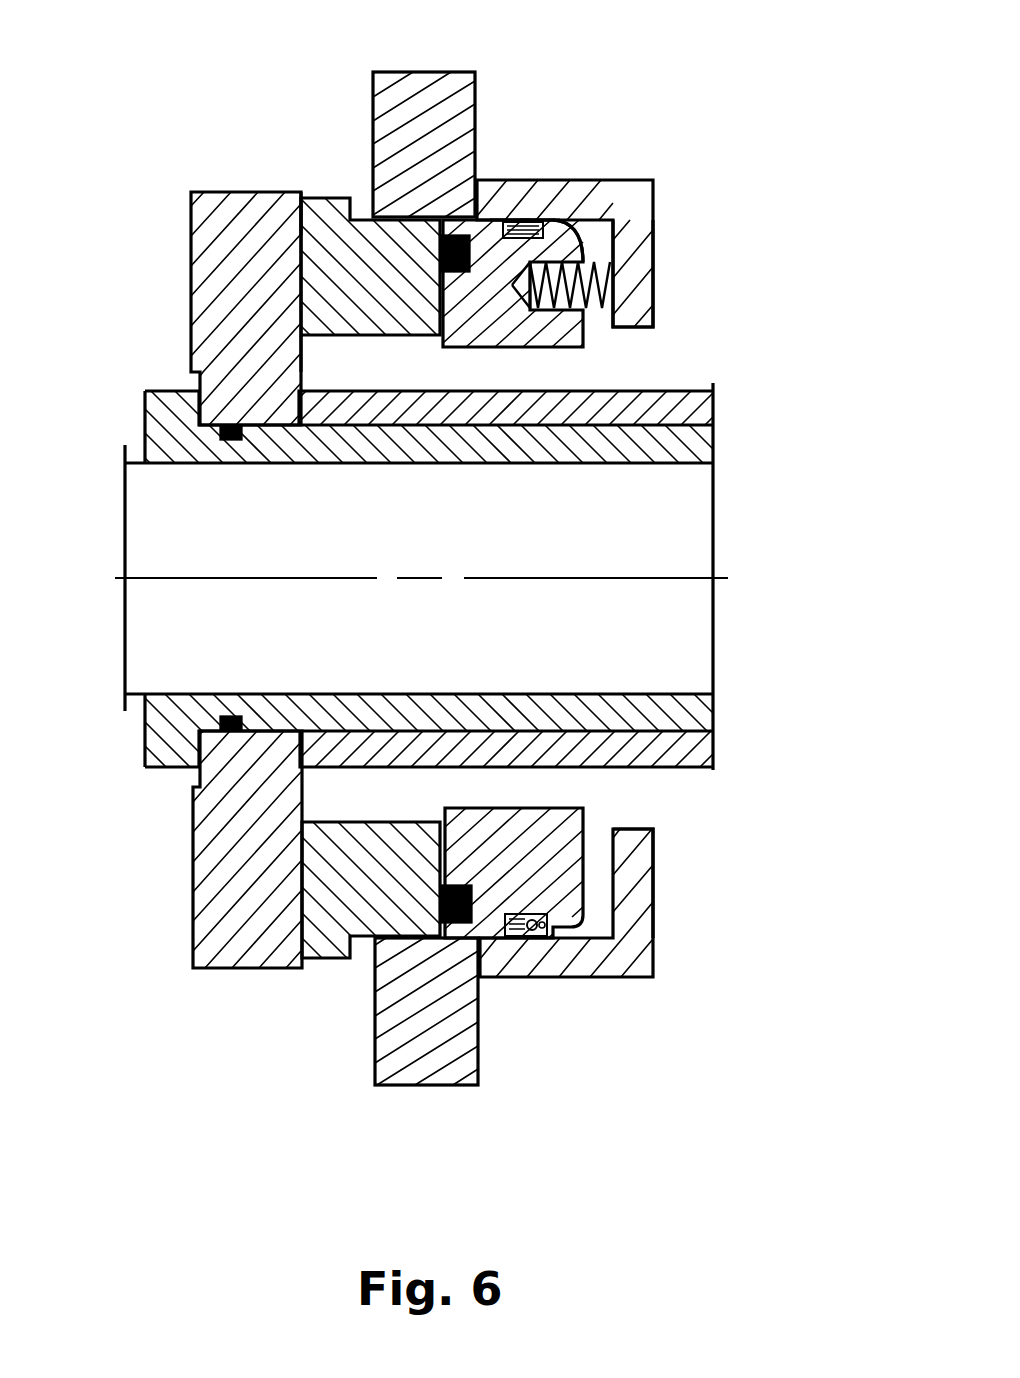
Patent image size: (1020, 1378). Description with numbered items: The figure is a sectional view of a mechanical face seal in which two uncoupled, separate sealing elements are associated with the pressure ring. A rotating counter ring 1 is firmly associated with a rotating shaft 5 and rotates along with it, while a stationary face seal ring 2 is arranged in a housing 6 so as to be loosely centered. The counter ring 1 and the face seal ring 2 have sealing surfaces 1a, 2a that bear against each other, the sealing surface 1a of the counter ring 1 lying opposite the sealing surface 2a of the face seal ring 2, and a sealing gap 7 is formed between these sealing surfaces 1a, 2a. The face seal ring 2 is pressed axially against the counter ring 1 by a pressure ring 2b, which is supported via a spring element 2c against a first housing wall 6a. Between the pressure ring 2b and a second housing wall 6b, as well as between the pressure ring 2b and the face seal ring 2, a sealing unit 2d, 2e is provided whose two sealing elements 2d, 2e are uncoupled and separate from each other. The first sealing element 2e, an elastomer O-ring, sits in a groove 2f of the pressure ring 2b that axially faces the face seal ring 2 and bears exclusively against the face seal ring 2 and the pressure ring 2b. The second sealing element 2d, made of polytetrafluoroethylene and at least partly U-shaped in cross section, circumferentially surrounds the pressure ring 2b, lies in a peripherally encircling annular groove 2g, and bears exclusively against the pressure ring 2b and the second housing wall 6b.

The counter ring 1 is at (200, 290).
The sealing surface 1a is at (303, 190).
The face seal ring 2 is at (336, 200).
The sealing surface 2a is at (332, 250).
The pressure ring 2b is at (492, 212).
The spring element 2c is at (593, 303).
The second sealing element 2d is at (537, 202).
The first sealing element 2e is at (462, 212).
The groove 2f is at (453, 272).
The annular groove 2g is at (540, 935).
The shaft 5 is at (145, 410).
The housing 6 is at (637, 200).
The first housing wall 6a is at (643, 243).
The second housing wall 6b is at (517, 207).
The sealing gap 7 is at (303, 340).